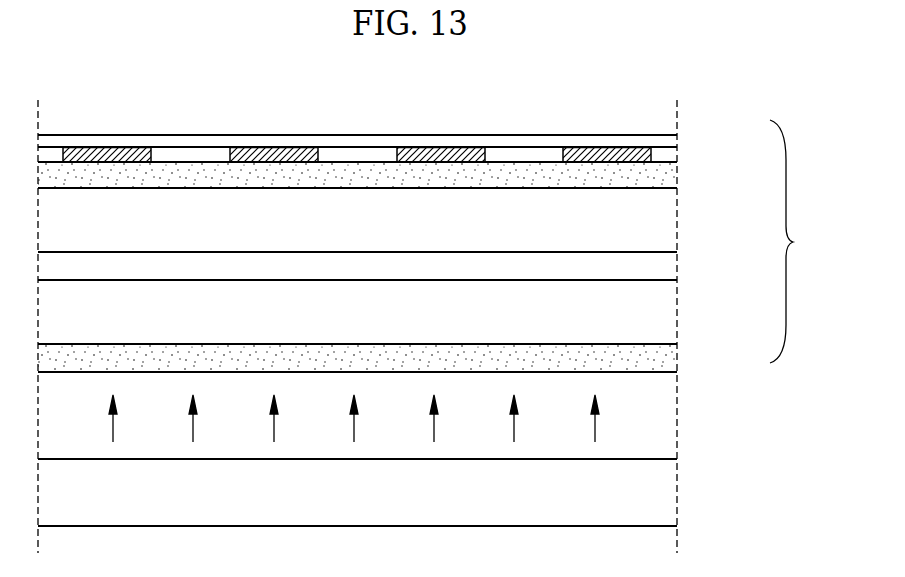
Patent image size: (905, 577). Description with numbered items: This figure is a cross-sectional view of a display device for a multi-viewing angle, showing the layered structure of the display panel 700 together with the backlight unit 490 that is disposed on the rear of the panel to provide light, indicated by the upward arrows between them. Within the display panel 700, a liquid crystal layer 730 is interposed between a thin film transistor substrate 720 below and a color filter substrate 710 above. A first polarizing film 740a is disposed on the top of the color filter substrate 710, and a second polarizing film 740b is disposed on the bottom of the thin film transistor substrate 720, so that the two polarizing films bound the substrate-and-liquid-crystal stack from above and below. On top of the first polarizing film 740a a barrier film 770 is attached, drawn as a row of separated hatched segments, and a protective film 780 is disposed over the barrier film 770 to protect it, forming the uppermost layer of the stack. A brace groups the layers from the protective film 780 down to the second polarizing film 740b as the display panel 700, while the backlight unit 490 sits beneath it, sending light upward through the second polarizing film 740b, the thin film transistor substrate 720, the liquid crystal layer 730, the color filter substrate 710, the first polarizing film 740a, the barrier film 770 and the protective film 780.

The protective film 780 is at (677, 135).
The barrier film 770 is at (677, 153).
The first polarizing film 740a is at (677, 178).
The color filter substrate 710 is at (677, 223).
The liquid crystal layer 730 is at (677, 263).
The thin film transistor substrate 720 is at (677, 313).
The second polarizing film 740b is at (677, 355).
The display panel 700 is at (806, 241).
The backlight unit 490 is at (677, 493).